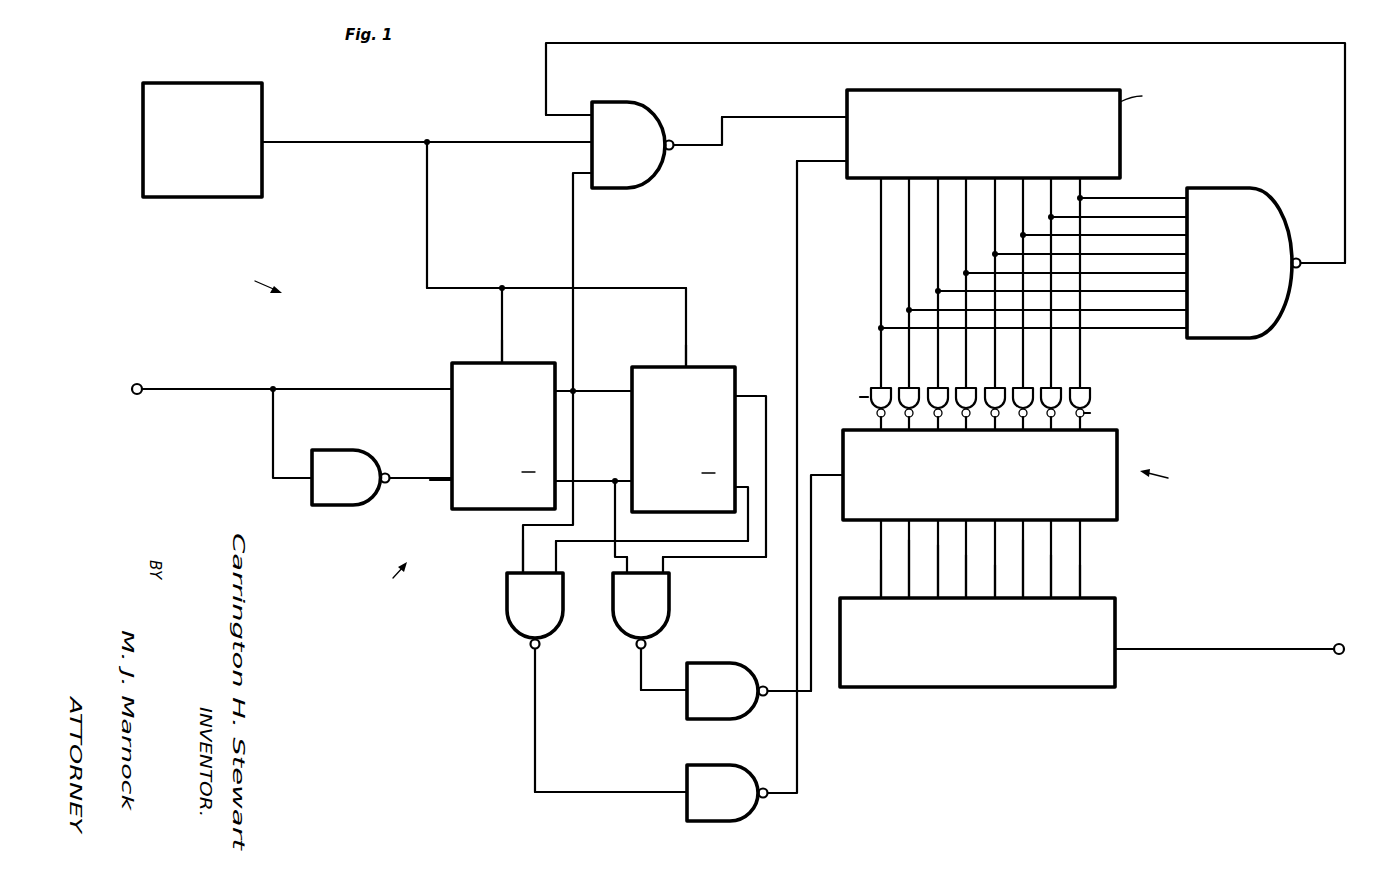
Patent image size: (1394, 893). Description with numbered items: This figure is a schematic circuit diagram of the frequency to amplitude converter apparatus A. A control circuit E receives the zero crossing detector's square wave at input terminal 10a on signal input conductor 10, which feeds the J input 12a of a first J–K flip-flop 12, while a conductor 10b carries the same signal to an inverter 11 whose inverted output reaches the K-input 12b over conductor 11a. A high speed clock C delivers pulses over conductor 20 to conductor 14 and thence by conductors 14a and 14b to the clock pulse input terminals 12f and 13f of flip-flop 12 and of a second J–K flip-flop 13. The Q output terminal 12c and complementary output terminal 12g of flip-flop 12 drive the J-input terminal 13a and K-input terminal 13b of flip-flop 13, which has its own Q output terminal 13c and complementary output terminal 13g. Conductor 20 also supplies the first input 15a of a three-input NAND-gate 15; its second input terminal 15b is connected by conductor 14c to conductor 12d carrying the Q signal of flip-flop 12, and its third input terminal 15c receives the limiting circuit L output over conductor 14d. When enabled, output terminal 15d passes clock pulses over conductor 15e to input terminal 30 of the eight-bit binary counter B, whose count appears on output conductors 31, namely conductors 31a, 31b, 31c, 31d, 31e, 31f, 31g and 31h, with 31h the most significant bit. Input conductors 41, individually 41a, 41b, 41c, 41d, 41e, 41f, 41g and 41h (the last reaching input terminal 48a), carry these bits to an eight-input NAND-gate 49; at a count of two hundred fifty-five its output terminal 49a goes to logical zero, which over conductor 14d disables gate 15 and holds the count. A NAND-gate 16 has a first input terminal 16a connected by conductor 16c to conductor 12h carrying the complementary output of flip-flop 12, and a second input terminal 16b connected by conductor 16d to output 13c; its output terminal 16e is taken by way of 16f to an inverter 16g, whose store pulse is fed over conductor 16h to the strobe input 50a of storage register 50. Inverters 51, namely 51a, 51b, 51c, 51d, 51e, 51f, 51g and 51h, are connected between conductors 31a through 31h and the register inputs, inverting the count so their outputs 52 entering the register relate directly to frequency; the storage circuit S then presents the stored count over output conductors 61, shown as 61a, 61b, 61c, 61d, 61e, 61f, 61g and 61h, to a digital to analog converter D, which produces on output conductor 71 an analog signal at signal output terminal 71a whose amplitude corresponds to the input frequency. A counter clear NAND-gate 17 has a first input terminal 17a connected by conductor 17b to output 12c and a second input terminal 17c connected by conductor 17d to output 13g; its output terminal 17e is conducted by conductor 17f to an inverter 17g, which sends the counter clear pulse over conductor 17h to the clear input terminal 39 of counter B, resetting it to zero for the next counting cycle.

The signal input conductor 10 is at (222, 387).
The input terminal 10a is at (132, 389).
The electrical conductor 10b is at (273, 445).
The inverter 11 is at (340, 450).
The electrical conductor 11a is at (398, 485).
The J–K flip-flop 12 is at (452, 363).
The J input 12a is at (447, 396).
The K-input 12b is at (447, 483).
The Q1 output terminal 12c is at (562, 380).
The electrical conductor 12d is at (593, 388).
The clock pulse input terminal 12f is at (498, 359).
The Q̄1 output terminal 12g is at (561, 480).
The electrical conductor 12h is at (558, 502).
The second J–K flip-flop 13 is at (666, 367).
The J-input terminal 13a is at (628, 396).
The K-input terminal 13b is at (630, 481).
The Q2 output terminal 13c is at (738, 392).
The clock pulse input terminal 13f is at (695, 367).
The Q̄2 output terminal 13g is at (737, 483).
The electrical conductor 14 is at (427, 248).
The conductor 14a is at (502, 307).
The conductor 14b is at (615, 286).
The conductor 14c is at (576, 250).
The electrical conductor 14d is at (735, 43).
The three-input NAND-gate 15 is at (620, 102).
The first input 15a is at (588, 150).
The second input terminal 15b is at (582, 180).
The third input terminal 15c is at (584, 112).
The output terminal 15d is at (672, 150).
The electrical conductor 15e is at (762, 117).
The NAND-gate 16 is at (618, 631).
The first input terminal 16a is at (621, 571).
The second input terminal 16b is at (668, 572).
The electrical conductor 16c is at (613, 521).
The conductor 16d is at (752, 560).
The output terminal 16e is at (636, 651).
The output line of gate 16 16f is at (636, 683).
The inverter 16g is at (707, 662).
The electrical conductor 16h is at (771, 690).
The counter clear NAND-gate 17 is at (512, 628).
The first input terminal 17a is at (512, 569).
The electrical conductor 17b is at (523, 538).
The second input terminal 17c is at (552, 566).
The conductor 17d is at (640, 540).
The output terminal 17e is at (529, 649).
The conductor 17f is at (533, 760).
The inverter 17g is at (713, 762).
The electrical conductor 17h is at (774, 792).
The electrical conductor 20 is at (464, 142).
The input terminal 30 is at (845, 93).
The output conductors 31 is at (855, 189).
The output conductor 31a is at (1130, 197).
The output conductor 31b is at (1050, 210).
The output conductor 31c is at (1022, 221).
The output conductor 31d is at (995, 230).
The output conductor 31e is at (967, 241).
The output conductor 31f is at (939, 253).
The output conductor 31g is at (909, 275).
The output conductor 31h is at (881, 285).
The counter clear input terminal 39 is at (834, 159).
The input conductors 41 is at (1170, 336).
The input conductor 41a is at (1150, 197).
The input conductor 41b is at (1158, 217).
The input conductor 41c is at (1140, 235).
The input conductor 41d is at (1142, 254).
The input conductor 41e is at (1142, 273).
The input conductor 41f is at (1140, 291).
The input conductor 41g is at (1142, 310).
The input conductor 41h is at (1142, 328).
The input terminal 48a is at (1190, 338).
The eight-input NAND-gate 49 is at (1280, 325).
The output terminal 49a is at (1300, 259).
The storage register 50 is at (1117, 438).
The strobe input 50a is at (842, 471).
The inverters 51 is at (862, 397).
The inverter 51a is at (1071, 387).
The inverter 51b is at (1042, 388).
The inverter 51c is at (1013, 387).
The inverter 51d is at (985, 388).
The inverter 51e is at (957, 387).
The inverter 51f is at (928, 388).
The inverter 51g is at (901, 387).
The inverter 51h is at (873, 388).
The transfer gate output 52 is at (1090, 418).
The output conductors 61 is at (1085, 563).
The storage register output line 61a is at (1078, 586).
The storage register output line 61b is at (1049, 577).
The storage register output line 61c is at (1021, 562).
The storage register output line 61d is at (992, 594).
The storage register output line 61e is at (964, 582).
The storage register output line 61f is at (936, 575).
The storage register output line 61g is at (907, 567).
The storage register output line 61h is at (876, 583).
The output conductor 71 is at (1178, 651).
The signal output terminal 71a is at (1344, 649).
The apparatus A is at (248, 279).
The eight-bit binary counter B is at (1145, 95).
The high speed clock C is at (262, 90).
The digital to analog converter D is at (1115, 608).
The control circuit E is at (387, 574).
The limiting circuit L is at (1240, 180).
The storage circuit S is at (1161, 478).